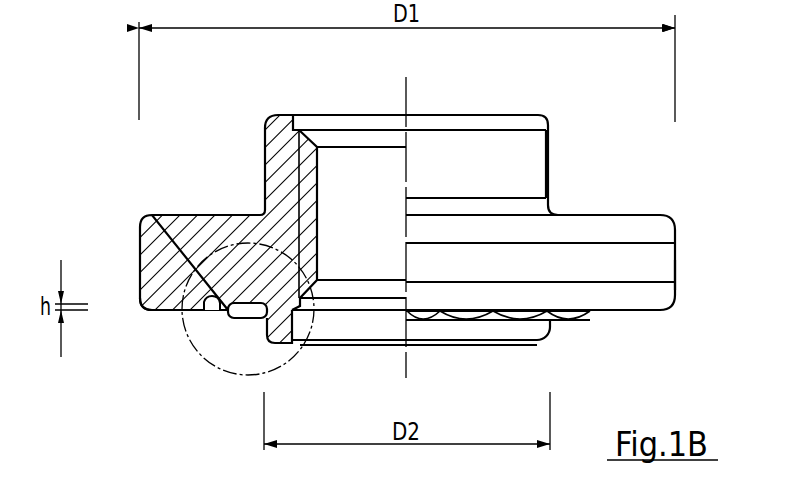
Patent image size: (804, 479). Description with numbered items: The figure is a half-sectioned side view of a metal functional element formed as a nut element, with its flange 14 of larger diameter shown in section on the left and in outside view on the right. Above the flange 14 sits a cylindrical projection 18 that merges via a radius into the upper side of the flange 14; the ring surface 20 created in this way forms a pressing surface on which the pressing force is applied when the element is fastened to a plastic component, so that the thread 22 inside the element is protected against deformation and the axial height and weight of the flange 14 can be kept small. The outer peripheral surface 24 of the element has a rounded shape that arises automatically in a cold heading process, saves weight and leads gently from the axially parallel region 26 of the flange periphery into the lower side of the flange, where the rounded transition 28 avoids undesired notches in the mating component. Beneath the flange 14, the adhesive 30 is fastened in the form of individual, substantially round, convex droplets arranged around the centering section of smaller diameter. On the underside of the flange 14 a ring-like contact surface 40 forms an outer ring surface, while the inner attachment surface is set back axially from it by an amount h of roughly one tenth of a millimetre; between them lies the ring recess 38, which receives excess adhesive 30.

The flange 14 is at (676, 255).
The cylindrical projection 18 is at (548, 152).
The ring surface 20 is at (625, 215).
The thread 22 is at (320, 186).
The outer peripheral surface 24 is at (140, 259).
The axially parallel region 26 is at (676, 275).
The rounded transition 28 is at (143, 310).
The adhesive 30 is at (558, 320).
The recess 38 is at (214, 303).
The contact surface 40 is at (167, 312).